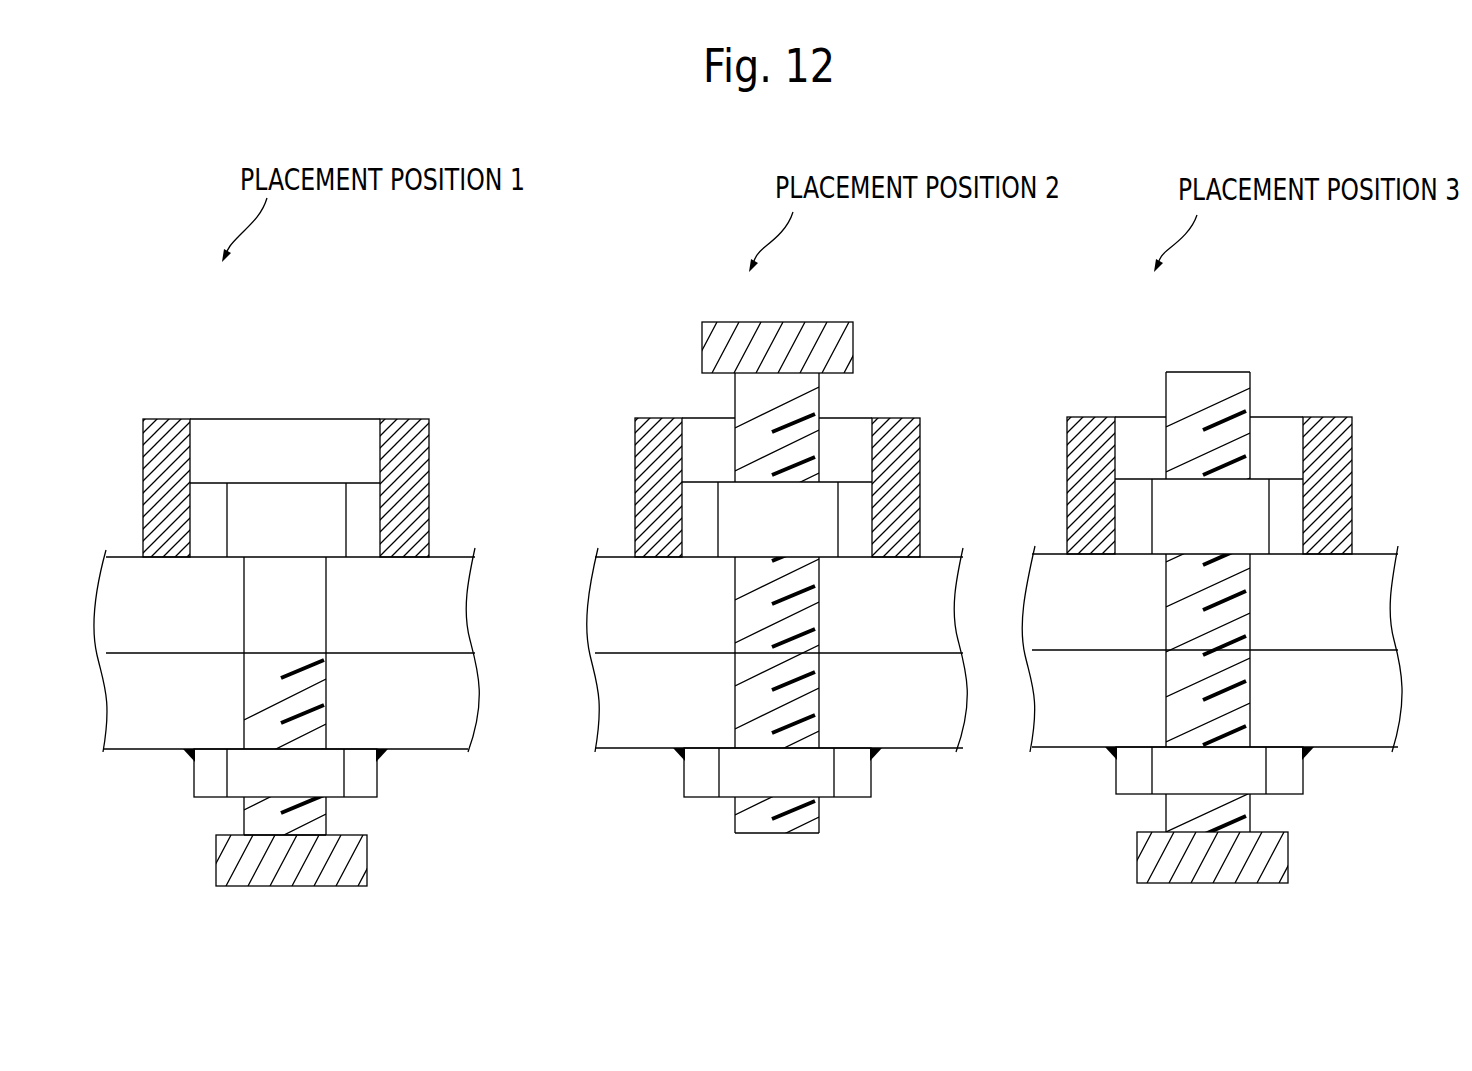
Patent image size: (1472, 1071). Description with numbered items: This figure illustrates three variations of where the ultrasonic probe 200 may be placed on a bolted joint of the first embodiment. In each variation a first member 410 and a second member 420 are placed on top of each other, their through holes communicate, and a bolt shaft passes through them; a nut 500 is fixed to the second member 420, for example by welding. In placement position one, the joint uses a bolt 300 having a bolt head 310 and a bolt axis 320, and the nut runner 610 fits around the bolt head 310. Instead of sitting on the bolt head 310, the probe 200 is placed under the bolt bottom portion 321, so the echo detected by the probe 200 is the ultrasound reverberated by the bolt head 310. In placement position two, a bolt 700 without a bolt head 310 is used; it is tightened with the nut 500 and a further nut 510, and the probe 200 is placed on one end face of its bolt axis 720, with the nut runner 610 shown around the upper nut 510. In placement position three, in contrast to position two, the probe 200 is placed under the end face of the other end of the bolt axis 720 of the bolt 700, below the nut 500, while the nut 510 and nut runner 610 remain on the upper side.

The probe 200 is at (294, 887).
The bolt 300 is at (316, 450).
The bolt head 310 is at (295, 484).
The bolt axis 320 is at (315, 633).
The bolt bottom portion 321 is at (246, 835).
The first member 410 is at (455, 557).
The second member 420 is at (455, 752).
The nut 500 is at (377, 800).
The nut 510 is at (818, 505).
The nut runner 610 is at (430, 427).
The bolt 700 is at (813, 396).
The bolt axis 720 is at (808, 822).